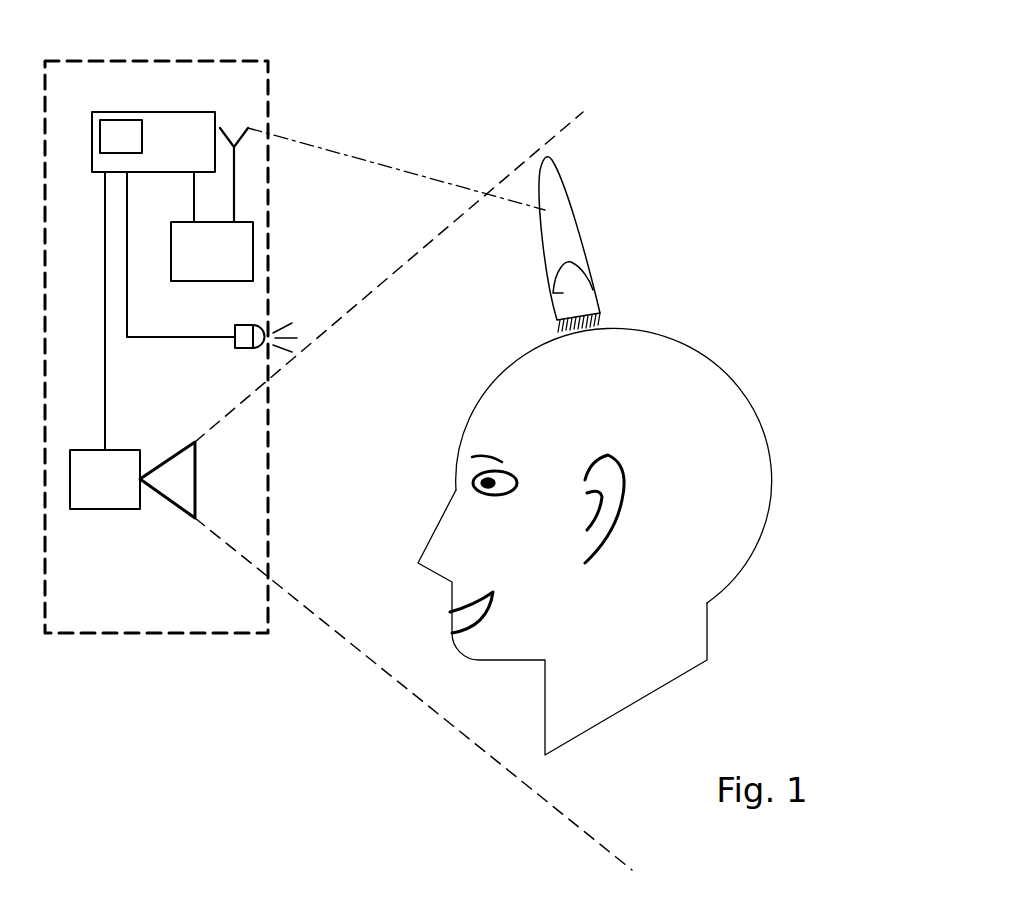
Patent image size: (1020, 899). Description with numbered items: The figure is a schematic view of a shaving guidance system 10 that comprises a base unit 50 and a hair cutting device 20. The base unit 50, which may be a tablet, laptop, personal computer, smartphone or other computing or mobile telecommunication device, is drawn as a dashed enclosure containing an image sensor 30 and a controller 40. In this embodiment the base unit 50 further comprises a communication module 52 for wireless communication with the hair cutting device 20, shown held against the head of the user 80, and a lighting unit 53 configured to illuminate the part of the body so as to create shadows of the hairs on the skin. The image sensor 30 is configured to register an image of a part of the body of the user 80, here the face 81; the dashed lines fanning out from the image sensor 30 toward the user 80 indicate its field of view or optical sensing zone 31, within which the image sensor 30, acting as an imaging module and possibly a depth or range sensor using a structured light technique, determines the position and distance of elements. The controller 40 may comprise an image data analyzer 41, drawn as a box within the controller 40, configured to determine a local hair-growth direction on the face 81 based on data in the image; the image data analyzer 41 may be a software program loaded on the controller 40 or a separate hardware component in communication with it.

The shaving guidance system 10 is at (695, 150).
The hair cutting device 20 is at (565, 215).
The image sensor 30 is at (117, 509).
The optical sensing zone 31 is at (448, 703).
The controller 40 is at (155, 112).
The image data analyzer 41 is at (115, 118).
The base unit 50 is at (169, 633).
The communication module 52 is at (250, 253).
The lighting unit 53 is at (238, 350).
The user 80 is at (710, 357).
The face 81 is at (478, 418).